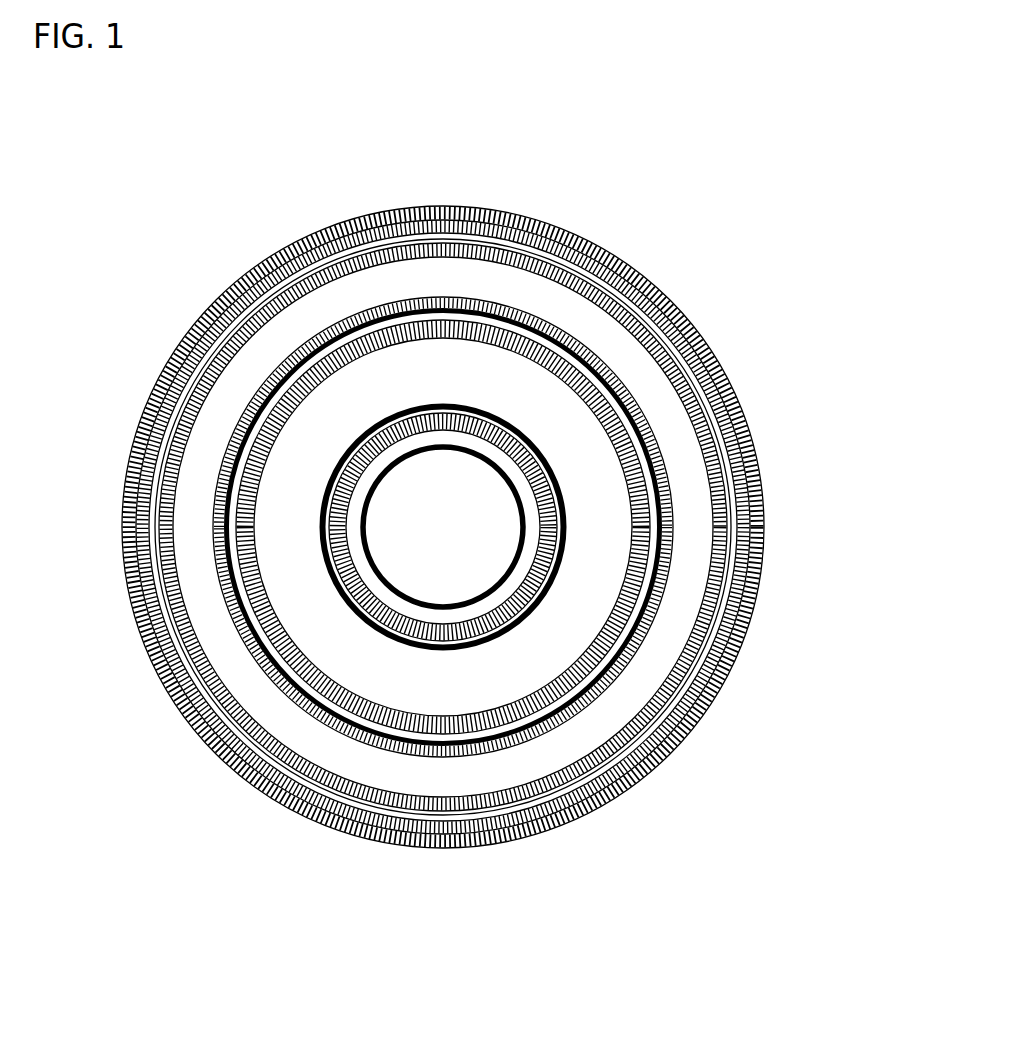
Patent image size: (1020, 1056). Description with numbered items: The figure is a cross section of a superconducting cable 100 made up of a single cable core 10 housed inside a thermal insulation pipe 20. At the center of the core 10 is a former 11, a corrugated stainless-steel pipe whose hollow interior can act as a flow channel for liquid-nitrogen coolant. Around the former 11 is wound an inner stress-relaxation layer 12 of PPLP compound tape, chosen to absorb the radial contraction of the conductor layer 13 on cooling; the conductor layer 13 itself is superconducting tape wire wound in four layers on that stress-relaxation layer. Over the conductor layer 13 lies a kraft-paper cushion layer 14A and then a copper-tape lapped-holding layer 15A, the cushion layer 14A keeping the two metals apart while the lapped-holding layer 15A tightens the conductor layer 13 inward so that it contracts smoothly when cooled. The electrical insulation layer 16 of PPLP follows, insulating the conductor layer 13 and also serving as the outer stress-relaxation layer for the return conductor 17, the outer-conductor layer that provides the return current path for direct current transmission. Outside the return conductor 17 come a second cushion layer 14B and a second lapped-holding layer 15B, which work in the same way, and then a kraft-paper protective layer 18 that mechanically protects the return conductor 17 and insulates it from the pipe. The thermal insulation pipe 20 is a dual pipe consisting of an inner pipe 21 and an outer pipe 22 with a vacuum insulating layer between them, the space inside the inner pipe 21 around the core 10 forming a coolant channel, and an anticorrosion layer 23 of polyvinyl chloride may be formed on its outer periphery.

The superconducting cable 100 is at (676, 219).
The cable core 10 is at (336, 317).
The former 11 is at (380, 588).
The inner stress-relaxation layer 12 is at (357, 553).
The conductor layer 13 is at (323, 513).
The cushion layer 14A is at (330, 468).
The outer-conductor cushion layer 14B is at (450, 742).
The lapped-holding layer 15A is at (357, 430).
The lapped-holding layer 15B is at (530, 742).
The electrical insulation layer 16 is at (457, 378).
The return conductor 17 is at (372, 745).
The protective layer 18 is at (690, 730).
The thermal insulation pipe 20 is at (865, 448).
The inner pipe 21 is at (723, 473).
The outer pipe 22 is at (747, 538).
The anticorrosion layer 23 is at (748, 620).